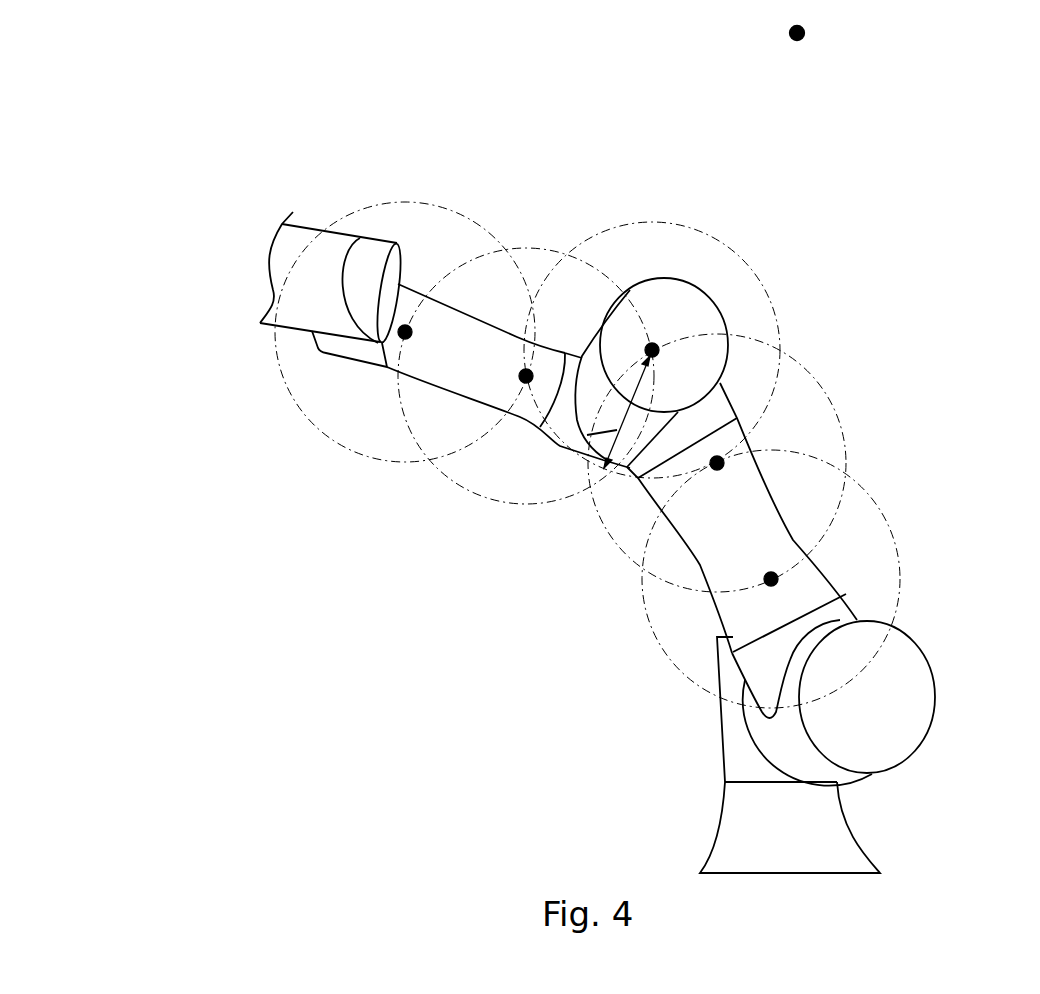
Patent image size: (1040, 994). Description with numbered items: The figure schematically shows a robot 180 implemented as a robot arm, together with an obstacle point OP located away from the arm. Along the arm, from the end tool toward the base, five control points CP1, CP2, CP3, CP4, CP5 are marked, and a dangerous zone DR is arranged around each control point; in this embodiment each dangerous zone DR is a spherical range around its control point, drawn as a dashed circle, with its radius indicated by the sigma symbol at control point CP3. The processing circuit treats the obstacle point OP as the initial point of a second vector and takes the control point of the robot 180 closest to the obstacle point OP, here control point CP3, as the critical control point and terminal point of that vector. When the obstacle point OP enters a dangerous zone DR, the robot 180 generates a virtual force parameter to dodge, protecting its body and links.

The robot 180 is at (148, 42).
The obstacle point OP is at (805, 33).
The dangerous zone DR is at (308, 422).
The control point CP1 is at (405, 332).
The control point CP2 is at (526, 376).
The control point CP3 is at (652, 350).
The control point CP4 is at (717, 463).
The control point CP5 is at (771, 579).